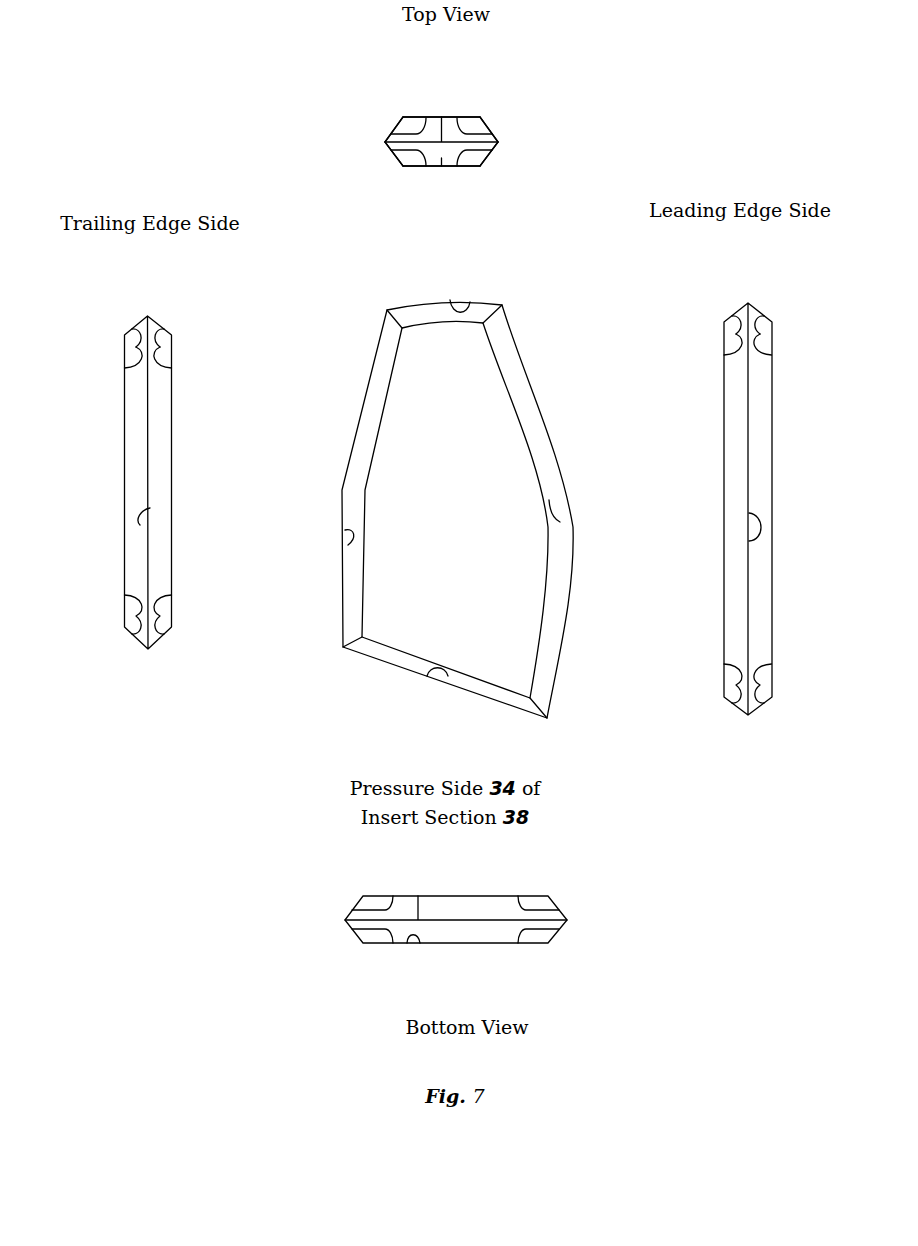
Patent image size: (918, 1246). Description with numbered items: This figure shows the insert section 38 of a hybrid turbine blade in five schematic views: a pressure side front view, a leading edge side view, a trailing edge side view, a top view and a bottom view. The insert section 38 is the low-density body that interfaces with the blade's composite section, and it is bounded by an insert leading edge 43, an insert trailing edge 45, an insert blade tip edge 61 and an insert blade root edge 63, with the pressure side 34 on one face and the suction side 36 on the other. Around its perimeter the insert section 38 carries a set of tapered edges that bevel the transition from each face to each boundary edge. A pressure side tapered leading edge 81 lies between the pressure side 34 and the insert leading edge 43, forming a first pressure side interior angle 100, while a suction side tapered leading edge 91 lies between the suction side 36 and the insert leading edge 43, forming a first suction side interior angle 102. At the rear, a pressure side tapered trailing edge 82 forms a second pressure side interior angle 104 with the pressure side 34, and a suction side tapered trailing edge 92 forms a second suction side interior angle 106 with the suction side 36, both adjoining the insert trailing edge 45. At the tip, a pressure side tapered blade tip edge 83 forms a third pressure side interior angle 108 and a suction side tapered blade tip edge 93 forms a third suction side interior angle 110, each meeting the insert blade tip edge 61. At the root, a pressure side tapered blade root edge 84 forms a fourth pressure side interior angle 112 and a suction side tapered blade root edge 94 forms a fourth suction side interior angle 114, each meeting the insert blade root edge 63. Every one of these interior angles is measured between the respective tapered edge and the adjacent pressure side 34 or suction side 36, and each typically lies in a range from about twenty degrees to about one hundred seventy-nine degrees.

The pressure side 34 is at (432, 167).
The suction side 36 is at (435, 117).
The insert section 38 is at (429, 477).
The insert leading edge 43 is at (498, 142).
The insert trailing edge 45 is at (386, 143).
The insert blade tip edge 61 is at (432, 117).
The insert blade root edge 63 is at (152, 650).
The pressure side tapered leading edge 81 is at (497, 146).
The pressure side tapered trailing edge 82 is at (390, 150).
The pressure side tapered blade tip edge 83 is at (444, 167).
The pressure side tapered blade root edge 84 is at (157, 643).
The suction side tapered leading edge 91 is at (490, 130).
The suction side tapered trailing edge 92 is at (388, 138).
The suction side tapered blade tip edge 93 is at (446, 118).
The suction side tapered blade root edge 94 is at (145, 643).
The first pressure side interior angle 100 is at (453, 167).
The first suction side interior angle 102 is at (456, 117).
The second pressure side interior angle 104 is at (426, 163).
The second suction side interior angle 106 is at (426, 118).
The third pressure side interior angle 108 is at (171, 368).
The third suction side interior angle 110 is at (131, 366).
The fourth pressure side interior angle 112 is at (168, 597).
The fourth suction side interior angle 114 is at (130, 598).